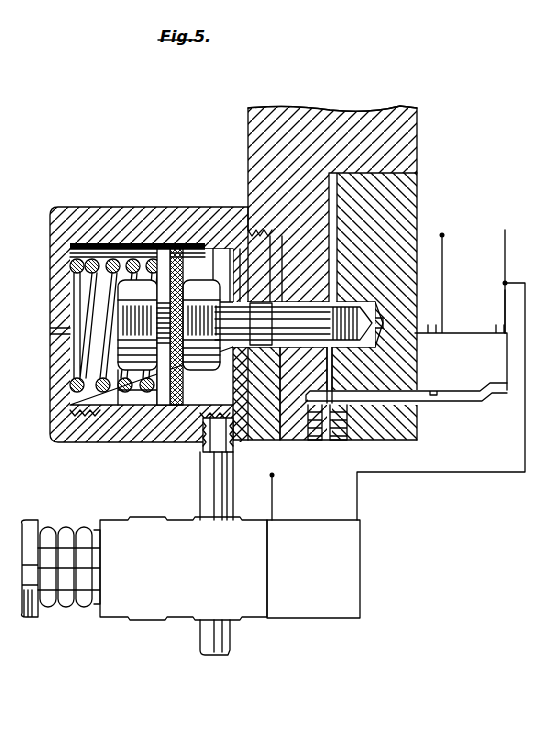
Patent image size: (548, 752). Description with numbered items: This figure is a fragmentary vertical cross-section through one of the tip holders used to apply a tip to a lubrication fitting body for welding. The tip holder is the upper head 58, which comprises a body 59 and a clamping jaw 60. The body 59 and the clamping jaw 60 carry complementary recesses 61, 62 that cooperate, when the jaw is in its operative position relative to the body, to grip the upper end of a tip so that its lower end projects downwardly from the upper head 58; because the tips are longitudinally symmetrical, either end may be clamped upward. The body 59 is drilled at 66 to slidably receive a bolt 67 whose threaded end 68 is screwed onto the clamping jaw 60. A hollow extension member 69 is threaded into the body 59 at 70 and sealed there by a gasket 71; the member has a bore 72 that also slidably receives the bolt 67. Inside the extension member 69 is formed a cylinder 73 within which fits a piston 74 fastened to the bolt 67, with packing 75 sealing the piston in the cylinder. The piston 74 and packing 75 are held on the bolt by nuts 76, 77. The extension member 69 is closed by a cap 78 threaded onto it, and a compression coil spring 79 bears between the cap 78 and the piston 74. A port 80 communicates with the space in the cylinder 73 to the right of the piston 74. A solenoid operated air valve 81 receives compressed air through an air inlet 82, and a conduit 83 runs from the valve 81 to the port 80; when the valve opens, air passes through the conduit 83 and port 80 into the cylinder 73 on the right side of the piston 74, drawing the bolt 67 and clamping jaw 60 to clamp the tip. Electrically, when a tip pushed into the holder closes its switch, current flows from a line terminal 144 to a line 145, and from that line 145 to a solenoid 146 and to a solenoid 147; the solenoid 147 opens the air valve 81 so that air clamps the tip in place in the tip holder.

The upper head 58 is at (250, 113).
The body 59 is at (268, 131).
The clamping jaw 60 is at (398, 190).
The recess 61 is at (294, 440).
The recess 62 is at (350, 440).
The drilled hole 66 is at (330, 360).
The bolt 67 is at (295, 324).
The threaded end 68 is at (367, 330).
The hollow extension member 69 is at (116, 443).
The threaded connection 70 is at (256, 230).
The gasket 71 is at (257, 440).
The bore 72 is at (240, 236).
The cylinder 73 is at (118, 240).
The piston 74 is at (168, 265).
The packing 75 is at (182, 270).
The nut 76 is at (140, 288).
The nut 77 is at (152, 443).
The cap 78 is at (55, 252).
The compression coil spring 79 is at (95, 245).
The port 80 is at (200, 440).
The solenoid operated air valve 81 is at (138, 606).
The air inlet 82 is at (200, 637).
The conduit 83 is at (205, 490).
The line terminal 144 is at (442, 235).
The line 145 is at (505, 301).
The solenoid 146 is at (505, 266).
The solenoid 147 is at (318, 614).